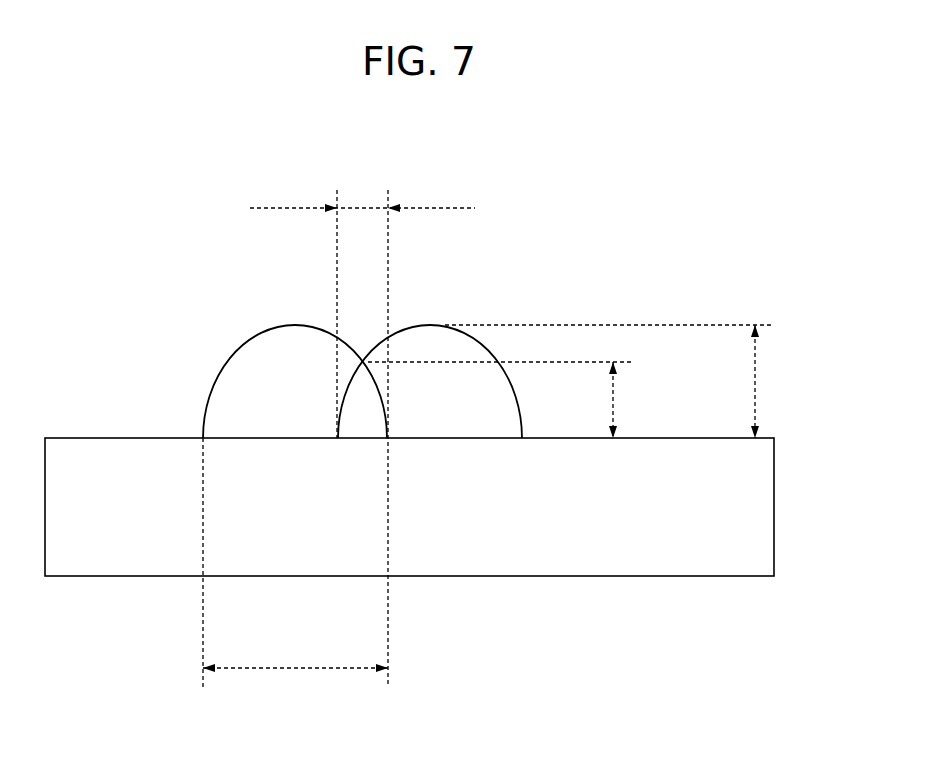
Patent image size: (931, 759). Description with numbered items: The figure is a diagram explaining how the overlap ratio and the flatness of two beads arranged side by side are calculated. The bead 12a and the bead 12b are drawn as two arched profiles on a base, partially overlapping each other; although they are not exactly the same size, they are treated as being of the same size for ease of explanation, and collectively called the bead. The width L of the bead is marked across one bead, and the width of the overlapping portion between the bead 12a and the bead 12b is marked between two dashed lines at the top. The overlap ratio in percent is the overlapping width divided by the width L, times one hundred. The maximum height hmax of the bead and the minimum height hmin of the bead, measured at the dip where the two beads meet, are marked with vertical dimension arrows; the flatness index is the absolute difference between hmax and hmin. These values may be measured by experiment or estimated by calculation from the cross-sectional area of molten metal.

The bead 12a is at (270, 358).
The bead 12b is at (455, 346).
The width of the bead L is at (295, 683).
The minimum height of the bead hmin is at (525, 400).
The maximum height of the bead hmax is at (638, 381).